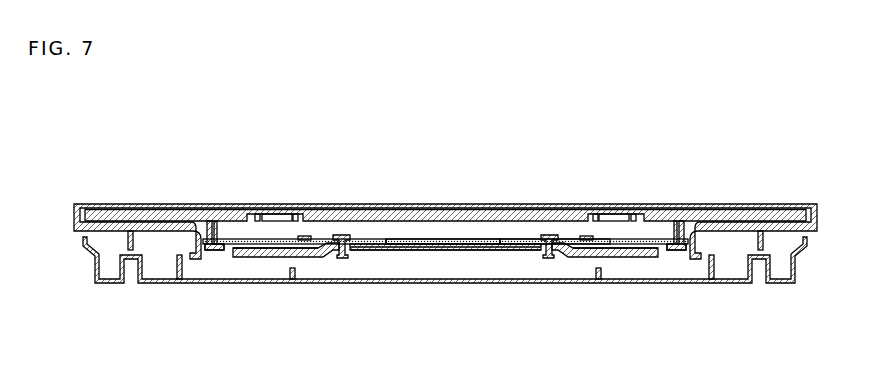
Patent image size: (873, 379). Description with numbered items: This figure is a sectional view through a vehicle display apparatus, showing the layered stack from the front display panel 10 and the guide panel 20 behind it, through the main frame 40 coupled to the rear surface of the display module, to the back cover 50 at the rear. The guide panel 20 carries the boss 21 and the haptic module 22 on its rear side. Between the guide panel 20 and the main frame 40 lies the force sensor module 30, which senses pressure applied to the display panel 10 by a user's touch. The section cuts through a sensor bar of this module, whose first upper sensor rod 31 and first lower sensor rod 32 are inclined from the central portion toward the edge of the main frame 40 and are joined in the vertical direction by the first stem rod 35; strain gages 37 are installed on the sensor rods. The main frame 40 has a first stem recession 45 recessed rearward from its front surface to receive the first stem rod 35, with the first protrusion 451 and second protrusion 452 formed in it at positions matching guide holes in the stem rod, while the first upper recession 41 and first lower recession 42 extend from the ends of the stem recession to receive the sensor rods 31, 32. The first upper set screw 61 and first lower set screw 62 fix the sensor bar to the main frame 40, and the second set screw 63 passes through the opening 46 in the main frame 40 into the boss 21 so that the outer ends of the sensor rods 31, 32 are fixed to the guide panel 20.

The display panel 10 is at (84, 201).
The guide panel 20 is at (119, 210).
The boss 21 is at (208, 226).
The haptic module 22 is at (278, 212).
The force sensor module 30 is at (382, 237).
The first upper sensor rod 31 is at (258, 246).
The first lower sensor rod 32 is at (641, 250).
The first stem rod 35 is at (521, 250).
The strain gage 37 is at (304, 237).
The main frame 40 is at (378, 252).
The first upper recession 41 is at (275, 251).
The first lower recession 42 is at (622, 256).
The first stem recession 45 is at (455, 250).
The first protrusion 451 is at (389, 240).
The second protrusion 452 is at (500, 240).
The opening 46 is at (217, 256).
The back cover 50 is at (741, 290).
The first upper set screw 61 is at (340, 235).
The first lower set screw 62 is at (548, 236).
The second set screw 63 is at (216, 227).